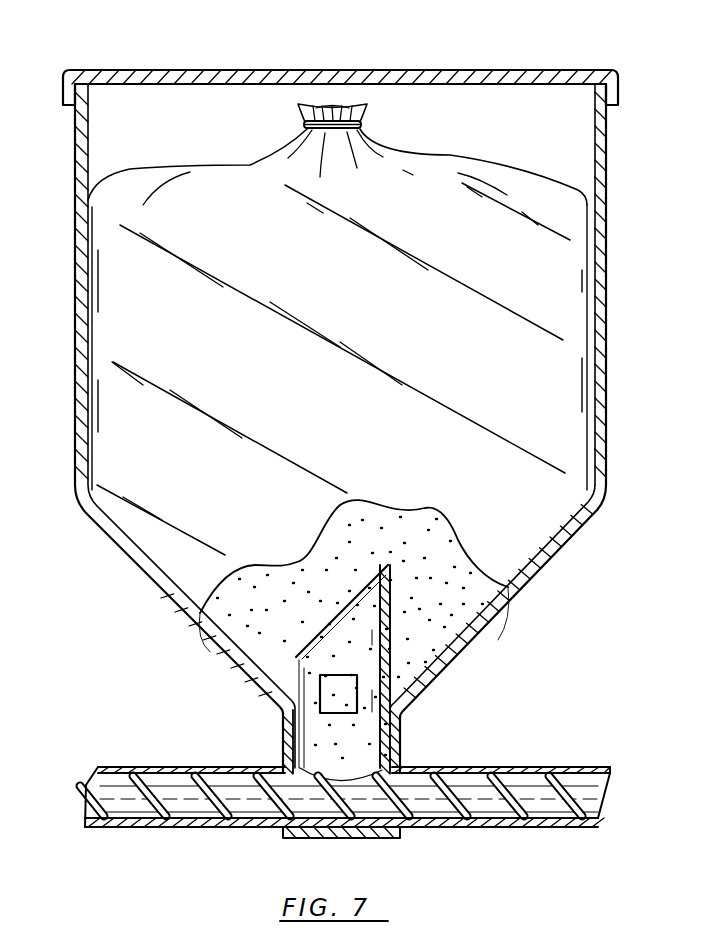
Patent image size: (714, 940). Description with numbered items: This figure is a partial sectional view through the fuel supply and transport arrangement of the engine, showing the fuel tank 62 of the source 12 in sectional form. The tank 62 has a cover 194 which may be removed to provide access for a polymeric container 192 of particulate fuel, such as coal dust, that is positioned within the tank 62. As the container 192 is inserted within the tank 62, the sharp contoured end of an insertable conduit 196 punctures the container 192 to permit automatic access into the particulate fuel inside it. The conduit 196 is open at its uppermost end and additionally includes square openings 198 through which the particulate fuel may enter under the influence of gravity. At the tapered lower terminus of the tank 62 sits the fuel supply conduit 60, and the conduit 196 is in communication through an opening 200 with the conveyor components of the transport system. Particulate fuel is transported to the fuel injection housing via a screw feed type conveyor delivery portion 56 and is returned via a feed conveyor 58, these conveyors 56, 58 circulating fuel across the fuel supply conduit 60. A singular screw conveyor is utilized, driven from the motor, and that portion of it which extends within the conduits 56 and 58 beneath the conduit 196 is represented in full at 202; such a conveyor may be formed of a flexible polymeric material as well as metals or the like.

The source 12 is at (503, 64).
The conveyor delivery portion 56 is at (546, 828).
The feed conveyor 58 is at (165, 828).
The fuel supply conduit 60 is at (283, 745).
The fuel tank 62 is at (607, 293).
The polymeric container 192 is at (128, 294).
The cover 194 is at (219, 69).
The insertable conduit 196 is at (390, 590).
The square openings 198 is at (350, 657).
The opening 200 is at (352, 772).
The screw conveyor portion 202 is at (437, 796).